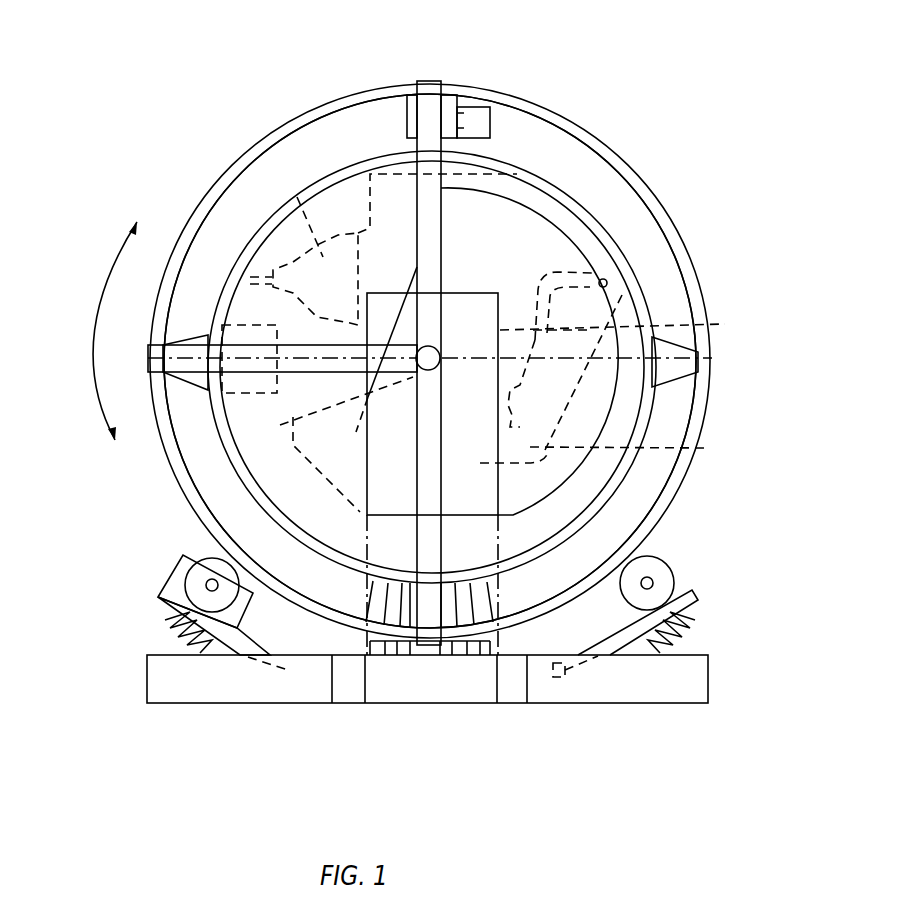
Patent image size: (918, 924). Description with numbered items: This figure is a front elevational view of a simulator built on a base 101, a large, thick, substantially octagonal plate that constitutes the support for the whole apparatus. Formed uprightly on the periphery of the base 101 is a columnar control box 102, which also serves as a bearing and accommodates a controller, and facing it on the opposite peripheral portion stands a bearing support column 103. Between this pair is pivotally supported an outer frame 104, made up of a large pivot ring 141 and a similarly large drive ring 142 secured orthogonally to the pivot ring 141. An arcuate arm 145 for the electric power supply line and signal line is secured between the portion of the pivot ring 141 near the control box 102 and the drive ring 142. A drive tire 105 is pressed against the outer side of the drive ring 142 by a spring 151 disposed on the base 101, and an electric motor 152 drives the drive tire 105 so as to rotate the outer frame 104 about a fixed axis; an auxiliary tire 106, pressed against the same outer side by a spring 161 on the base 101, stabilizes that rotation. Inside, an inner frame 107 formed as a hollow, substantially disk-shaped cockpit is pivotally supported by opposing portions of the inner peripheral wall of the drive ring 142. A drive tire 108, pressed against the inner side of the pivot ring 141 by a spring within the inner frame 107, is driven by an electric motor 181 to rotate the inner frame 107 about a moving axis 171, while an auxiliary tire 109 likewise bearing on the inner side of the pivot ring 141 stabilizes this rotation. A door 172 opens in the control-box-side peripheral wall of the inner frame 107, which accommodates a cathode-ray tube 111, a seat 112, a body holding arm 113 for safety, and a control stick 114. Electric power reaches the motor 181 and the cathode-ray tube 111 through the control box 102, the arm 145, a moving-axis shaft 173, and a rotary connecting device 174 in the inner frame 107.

The base 101 is at (665, 683).
The control box 102 is at (383, 535).
The bearing support column 103 is at (478, 618).
The outer frame 104 is at (342, 88).
The drive tire 105 is at (200, 583).
The auxiliary tire 106 is at (660, 571).
The inner frame 107 is at (634, 248).
The drive tire 108 is at (452, 105).
The auxiliary tire 109 is at (407, 612).
The cathode-ray tube 111 is at (297, 197).
The seat 112 is at (707, 448).
The body holding arm 113 is at (712, 331).
The control stick 114 is at (438, 312).
The pivot ring 141 is at (428, 112).
The drive ring 142 is at (209, 193).
The arcuate arm 145 is at (218, 347).
The spring 151 is at (162, 630).
The electric motor 152 is at (184, 563).
The spring 161 is at (693, 630).
The moving axis 171 is at (458, 360).
The door 172 is at (576, 320).
The moving-axis shaft 173 is at (158, 335).
The rotary connecting device 174 is at (253, 383).
The electric motor 181 is at (486, 115).